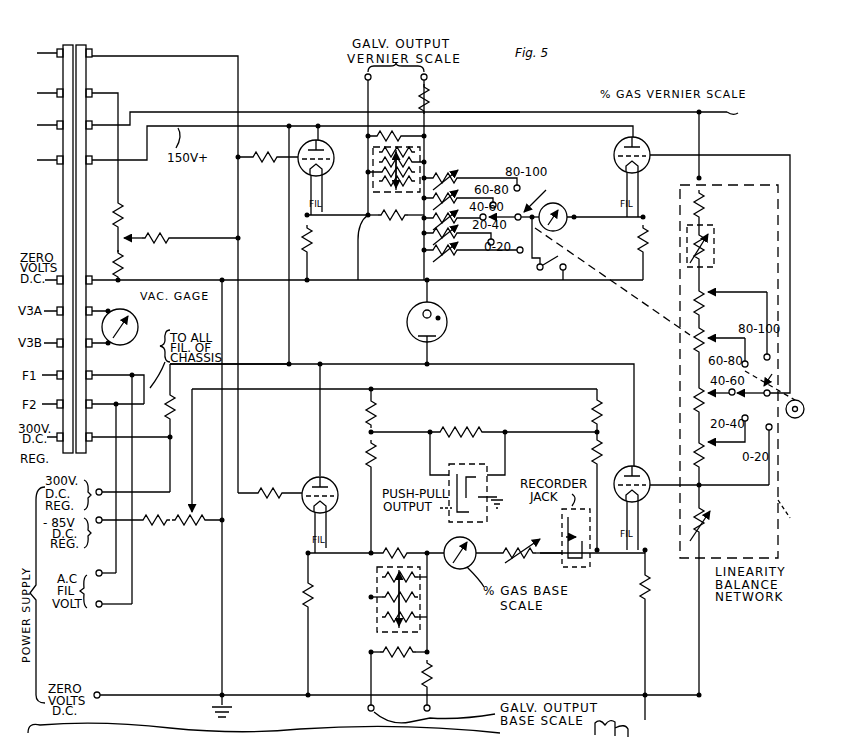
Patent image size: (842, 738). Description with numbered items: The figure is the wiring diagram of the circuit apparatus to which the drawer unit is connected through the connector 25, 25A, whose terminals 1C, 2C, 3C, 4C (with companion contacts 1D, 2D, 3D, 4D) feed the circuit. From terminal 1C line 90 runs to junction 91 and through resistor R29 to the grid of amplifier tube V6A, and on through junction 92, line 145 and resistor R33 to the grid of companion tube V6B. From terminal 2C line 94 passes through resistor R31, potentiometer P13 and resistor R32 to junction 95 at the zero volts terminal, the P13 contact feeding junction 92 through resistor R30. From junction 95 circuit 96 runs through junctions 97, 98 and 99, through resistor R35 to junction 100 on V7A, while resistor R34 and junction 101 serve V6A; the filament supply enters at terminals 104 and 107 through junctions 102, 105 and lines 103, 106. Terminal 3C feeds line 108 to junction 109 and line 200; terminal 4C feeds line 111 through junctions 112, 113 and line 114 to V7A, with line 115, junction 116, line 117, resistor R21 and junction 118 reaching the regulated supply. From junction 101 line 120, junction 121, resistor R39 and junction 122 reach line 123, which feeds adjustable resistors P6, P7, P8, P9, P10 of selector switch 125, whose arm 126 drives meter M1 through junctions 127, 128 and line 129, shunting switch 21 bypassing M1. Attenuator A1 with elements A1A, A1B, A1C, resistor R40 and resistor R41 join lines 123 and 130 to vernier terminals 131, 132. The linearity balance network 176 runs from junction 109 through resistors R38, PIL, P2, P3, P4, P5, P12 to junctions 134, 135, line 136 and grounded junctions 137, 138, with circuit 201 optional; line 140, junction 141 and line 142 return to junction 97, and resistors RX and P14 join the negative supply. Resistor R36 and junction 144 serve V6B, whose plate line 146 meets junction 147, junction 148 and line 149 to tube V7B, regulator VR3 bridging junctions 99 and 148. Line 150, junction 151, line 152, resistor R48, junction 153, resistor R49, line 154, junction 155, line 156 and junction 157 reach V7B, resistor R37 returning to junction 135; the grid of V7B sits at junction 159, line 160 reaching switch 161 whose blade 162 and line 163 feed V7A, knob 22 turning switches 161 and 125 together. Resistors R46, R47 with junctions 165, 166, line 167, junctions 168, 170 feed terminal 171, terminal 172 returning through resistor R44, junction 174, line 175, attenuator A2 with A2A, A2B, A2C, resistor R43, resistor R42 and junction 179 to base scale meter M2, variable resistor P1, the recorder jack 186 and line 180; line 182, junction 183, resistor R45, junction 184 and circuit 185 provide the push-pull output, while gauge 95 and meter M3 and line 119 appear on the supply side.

The connector 25A is at (66, 45).
The connector 25 is at (80, 45).
The terminal 1D is at (57, 51).
The terminal 2D is at (57, 92).
The terminal 3D is at (57, 124).
The terminal 4D is at (57, 164).
The terminal 1C is at (92, 52).
The terminal 2C is at (92, 90).
The terminal 3C is at (92, 122).
The terminal 4C is at (92, 164).
The line 90 is at (190, 57).
The junction 91 is at (238, 168).
The junction 92 is at (240, 238).
The line 94 is at (118, 100).
The junction 95 is at (130, 318).
The circuit 96 is at (192, 280).
The junction 97 is at (222, 278).
The junction 98 is at (309, 278).
The junction 99 is at (426, 282).
The junction 100 is at (645, 217).
The junction 101 is at (300, 214).
The junction 102 is at (132, 373).
The line 103 is at (135, 468).
The power input terminal 104 is at (105, 608).
The junction 105 is at (118, 425).
The line 106 is at (116, 480).
The terminal 107 is at (102, 560).
The line 108 is at (250, 112).
The junction 109 is at (711, 145).
The line 111 is at (134, 160).
The junction 112 is at (289, 124).
The junction 113 is at (320, 124).
The line 114 is at (512, 112).
The line 115 is at (289, 312).
The junction 116 is at (289, 345).
The line 117 is at (240, 360).
The junction 118 is at (143, 454).
The conductor 119 is at (150, 495).
The line 120 is at (352, 217).
The junction 121 is at (380, 216).
The junction 122 is at (420, 233).
The line 123 is at (420, 253).
The rotary selector switch 125 is at (544, 192).
The selector arm 126 is at (514, 209).
The junction 127 is at (548, 248).
The junction 128 is at (578, 217).
The line 129 is at (588, 220).
The line 130 is at (356, 247).
The terminal 131 is at (365, 78).
The terminal 132 is at (426, 80).
The junction 134 is at (699, 690).
The junction 135 is at (645, 690).
The line 136 is at (597, 695).
The junction 137 is at (308, 692).
The junction 138 is at (222, 693).
The line 140 is at (222, 588).
The junction 141 is at (226, 522).
The line 142 is at (222, 462).
The junction 144 is at (308, 553).
The line 145 is at (240, 440).
The line 146 is at (320, 412).
The junction 147 is at (322, 362).
The junction 148 is at (430, 366).
The line 149 is at (500, 364).
The line 150 is at (240, 389).
The junction 151 is at (371, 388).
The line 152 is at (505, 389).
The junction 153 is at (597, 430).
The line 154 is at (597, 472).
The junction 155 is at (597, 552).
The line 156 is at (636, 556).
The junction 157 is at (645, 548).
The junction 159 is at (706, 484).
The line 160 is at (755, 487).
The rotary switch 161 is at (770, 380).
The rotary contact 162 is at (754, 403).
The line 163 is at (740, 155).
The junction 165 is at (375, 428).
The junction 166 is at (371, 548).
The line 167 is at (371, 592).
The junction 168 is at (371, 600).
The junction 170 is at (371, 652).
The output terminal 171 is at (368, 710).
The terminal 172 is at (430, 708).
The junction 174 is at (429, 652).
The line 175 is at (421, 631).
The linearity balance network 176 is at (699, 626).
The junction 179 is at (427, 550).
The line 180 is at (336, 555).
The line 182 is at (396, 434).
The junction 183 is at (429, 430).
The junction 184 is at (505, 429).
The circuit 185 is at (527, 436).
The push-pull output 186 is at (470, 522).
The line 200 is at (747, 115).
The circuit 201 is at (675, 695).
The shunting switch 21 is at (557, 278).
The manual operating knob 22 is at (795, 418).
The resistor R21 is at (164, 420).
The resistor R29 is at (267, 150).
The resistor R30 is at (155, 222).
The resistor R31 is at (131, 217).
The resistor R32 is at (121, 263).
The resistor R33 is at (270, 502).
The resistor R34 is at (320, 252).
The resistor R35 is at (643, 245).
The resistor R36 is at (308, 606).
The resistor R37 is at (648, 590).
The resistor R38 is at (702, 202).
The resistor R39 is at (394, 223).
The resistor R40 is at (396, 130).
The resistor R41 is at (428, 94).
The resistor R42 is at (399, 543).
The resistor R43 is at (403, 661).
The resistor R44 is at (430, 675).
The resistor R45 is at (452, 438).
The resistor R46 is at (356, 408).
The resistor R47 is at (355, 496).
The resistor R48 is at (597, 410).
The resistor R49 is at (597, 456).
The resistor RX is at (155, 533).
The variable resistor P1 is at (531, 558).
The potentiometer resistor P2 is at (706, 302).
The potentiometer resistor P3 is at (706, 326).
The potentiometer resistor P4 is at (706, 405).
The potentiometer resistor P5 is at (706, 455).
The adjustable resistor P6 is at (472, 173).
The adjustable resistor P7 is at (460, 189).
The adjustable resistor P8 is at (424, 262).
The adjustable resistor P9 is at (440, 258).
The adjustable resistor P10 is at (466, 256).
The variable resistor P12 is at (703, 500).
The potentiometer resistor P13 is at (117, 242).
The potentiometer resistor P14 is at (190, 510).
The variable resistor PIL is at (714, 250).
The amplifier tube V6A is at (325, 173).
The amplifier tube V6B is at (308, 480).
The amplifier tube V7A is at (643, 142).
The amplifier tube V7B is at (643, 471).
The voltage regulator tube VR3 is at (445, 336).
The meter M1 is at (562, 206).
The base scale meter M2 is at (474, 560).
The meter M3 is at (140, 322).
The T-pad attenuator resistor A1 is at (420, 147).
The variable element A1A is at (378, 152).
The variable element A1B is at (379, 181).
The third element A1C is at (424, 160).
The T-pad attenuator resistor unit A2 is at (377, 632).
The resistor A2A is at (420, 580).
The middle variable resistor A2B is at (420, 598).
The resistor A2C is at (420, 614).